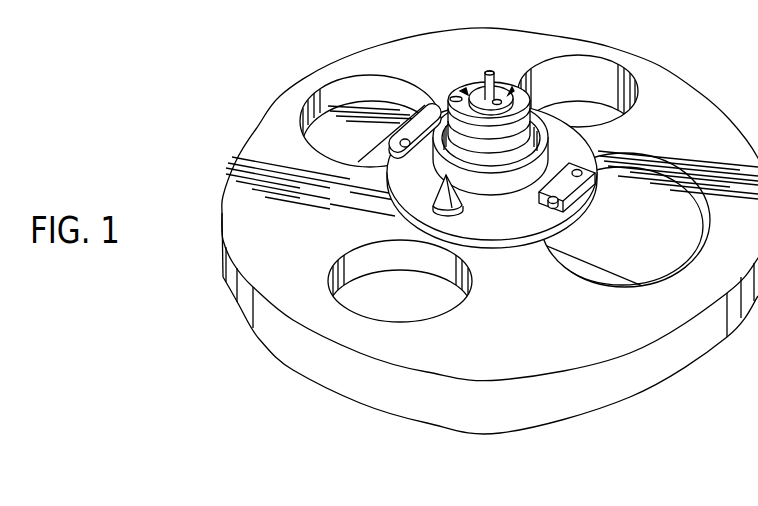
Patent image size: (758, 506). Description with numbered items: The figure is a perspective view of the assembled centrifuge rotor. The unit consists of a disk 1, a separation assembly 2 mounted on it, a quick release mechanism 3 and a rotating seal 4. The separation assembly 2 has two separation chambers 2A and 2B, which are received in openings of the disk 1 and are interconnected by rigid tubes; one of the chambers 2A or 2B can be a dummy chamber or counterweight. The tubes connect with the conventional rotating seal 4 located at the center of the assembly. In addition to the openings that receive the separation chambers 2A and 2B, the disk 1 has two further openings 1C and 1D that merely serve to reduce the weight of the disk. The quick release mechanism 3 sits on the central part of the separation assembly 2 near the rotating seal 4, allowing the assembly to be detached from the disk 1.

The disk 1 is at (678, 84).
The opening 1C is at (408, 307).
The opening 1D is at (598, 127).
The separation assembly 2 is at (572, 151).
The separation chamber 2A is at (623, 250).
The separation chamber 2B is at (357, 150).
The quick release mechanism 3 is at (424, 194).
The rotating seal 4 is at (507, 84).